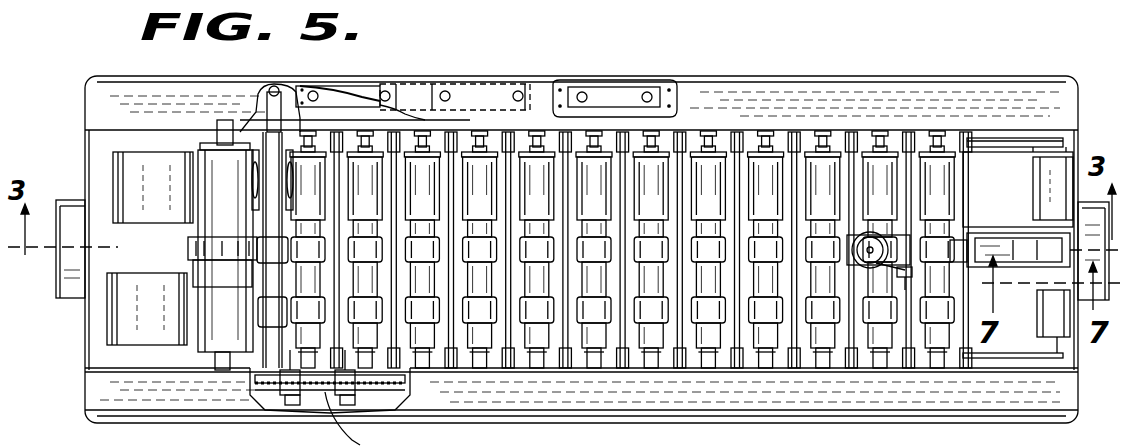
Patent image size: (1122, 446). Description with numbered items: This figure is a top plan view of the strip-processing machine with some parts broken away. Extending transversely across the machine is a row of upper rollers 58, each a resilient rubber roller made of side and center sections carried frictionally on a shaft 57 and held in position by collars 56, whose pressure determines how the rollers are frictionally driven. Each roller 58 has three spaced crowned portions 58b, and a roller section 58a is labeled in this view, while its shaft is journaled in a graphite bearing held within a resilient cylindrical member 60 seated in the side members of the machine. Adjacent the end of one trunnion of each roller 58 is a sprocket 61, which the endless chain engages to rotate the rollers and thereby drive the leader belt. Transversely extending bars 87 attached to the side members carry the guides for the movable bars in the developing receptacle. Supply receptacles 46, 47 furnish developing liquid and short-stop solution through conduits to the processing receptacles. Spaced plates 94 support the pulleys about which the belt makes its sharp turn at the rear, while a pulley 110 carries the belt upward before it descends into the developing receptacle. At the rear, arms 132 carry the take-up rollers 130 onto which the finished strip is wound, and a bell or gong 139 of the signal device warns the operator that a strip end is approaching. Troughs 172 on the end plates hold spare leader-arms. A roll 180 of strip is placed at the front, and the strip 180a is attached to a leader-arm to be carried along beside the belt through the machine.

The supply receptacle 46 is at (460, 90).
The supply receptacle 47 is at (376, 86).
The collar 56 is at (660, 148).
The shaft 57 is at (824, 150).
The upper roller 58 is at (480, 345).
The spindle bearing 58a is at (600, 362).
The crowned portion 58b is at (532, 366).
The resilient member 60 is at (415, 118).
The sprocket 61 is at (376, 396).
The transversely extending bar 87 is at (291, 377).
The plate 94 is at (1000, 234).
The pulley 110 is at (200, 350).
The roller 130 is at (1033, 335).
The arm 132 is at (1022, 146).
The bell or gong 139 is at (868, 234).
The trough or receptacle 172 is at (72, 212).
The roll 180 is at (165, 172).
The strip 180a is at (221, 135).